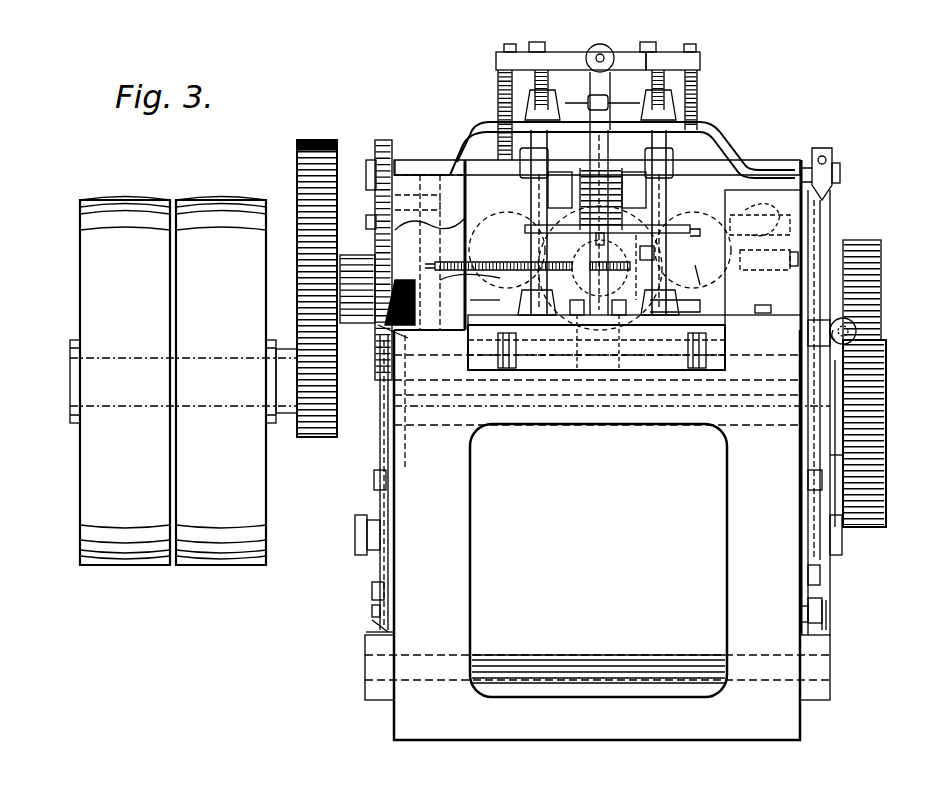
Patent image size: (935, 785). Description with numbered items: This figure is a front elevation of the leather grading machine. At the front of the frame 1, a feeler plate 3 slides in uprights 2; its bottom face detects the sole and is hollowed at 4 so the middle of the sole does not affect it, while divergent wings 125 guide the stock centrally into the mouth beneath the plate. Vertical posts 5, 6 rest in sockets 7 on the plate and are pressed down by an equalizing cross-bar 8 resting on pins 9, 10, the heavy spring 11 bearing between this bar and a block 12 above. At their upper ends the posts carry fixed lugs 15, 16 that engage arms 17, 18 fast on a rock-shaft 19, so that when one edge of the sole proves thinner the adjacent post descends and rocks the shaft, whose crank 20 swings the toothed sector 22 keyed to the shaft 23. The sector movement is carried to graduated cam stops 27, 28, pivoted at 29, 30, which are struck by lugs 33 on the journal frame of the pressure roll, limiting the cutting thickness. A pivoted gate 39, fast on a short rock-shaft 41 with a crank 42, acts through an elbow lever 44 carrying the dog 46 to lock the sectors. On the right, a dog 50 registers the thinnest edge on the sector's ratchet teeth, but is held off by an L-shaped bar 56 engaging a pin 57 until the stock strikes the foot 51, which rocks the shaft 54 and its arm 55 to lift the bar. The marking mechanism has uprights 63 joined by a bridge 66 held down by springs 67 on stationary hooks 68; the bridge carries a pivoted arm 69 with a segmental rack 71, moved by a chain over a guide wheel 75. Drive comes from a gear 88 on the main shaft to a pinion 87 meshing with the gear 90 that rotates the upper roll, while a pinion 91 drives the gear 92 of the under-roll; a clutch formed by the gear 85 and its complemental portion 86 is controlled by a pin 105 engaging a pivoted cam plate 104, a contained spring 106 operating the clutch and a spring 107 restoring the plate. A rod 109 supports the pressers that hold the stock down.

The frame 1 is at (612, 435).
The uprights 2 is at (763, 252).
The plate 3 is at (688, 324).
The hollowed portion 4 is at (590, 315).
The vertical post 5 is at (660, 285).
The vertical post 6 is at (535, 288).
The sockets 7 is at (520, 302).
The equalizing cross-bar 8 is at (660, 250).
The bracket or horizontal pin 9 is at (678, 236).
The bracket or horizontal pin 10 is at (540, 238).
The heavy spring 11 is at (585, 210).
The block 12 is at (694, 294).
The fixed lug 15 is at (650, 175).
The fixed lug 16 is at (555, 175).
The arm or lever 17 is at (634, 190).
The arm or lever 18 is at (560, 190).
The rock-shaft 19 is at (841, 170).
The crank 20 is at (830, 150).
The toothed sector 22 is at (880, 452).
The shaft 23 is at (437, 415).
The cam stop 27 is at (826, 626).
The cam stop 28 is at (366, 632).
The pivot 29 is at (842, 540).
The pivot 30 is at (356, 542).
The lugs 33 is at (366, 692).
The pivoted gate 39 is at (560, 350).
The short rock-shaft 41 is at (400, 378).
The crank 42 is at (402, 400).
The elbow lever 44 is at (394, 504).
The dog or detent 46 is at (372, 604).
The dog 50 is at (822, 610).
The foot 51 is at (637, 267).
The rock-shaft 54 is at (709, 275).
The arm 55 is at (798, 255).
The L-shaped bar 56 is at (808, 272).
The pin 57 is at (800, 614).
The uprights 63 is at (551, 80).
The bridge 66 is at (566, 58).
The springs 67 is at (497, 94).
The stationary hooks 68 is at (505, 160).
The pivoted arm 69 is at (608, 70).
The segmental rack 71 is at (690, 205).
The guide wheel 75 is at (826, 204).
The gear 85 is at (378, 325).
The clutch portion 86 is at (345, 262).
The pinion 87 is at (300, 282).
The gear 88 is at (304, 437).
The gear 90 is at (299, 158).
The pinion 91 is at (888, 380).
The gear 92 is at (882, 262).
The pivoted cam plate 104 is at (392, 337).
The pin 105 is at (508, 270).
The spring 106 is at (440, 268).
The spring 107 is at (484, 299).
The rod 109 is at (600, 268).
The divergent wings 125 is at (507, 368).